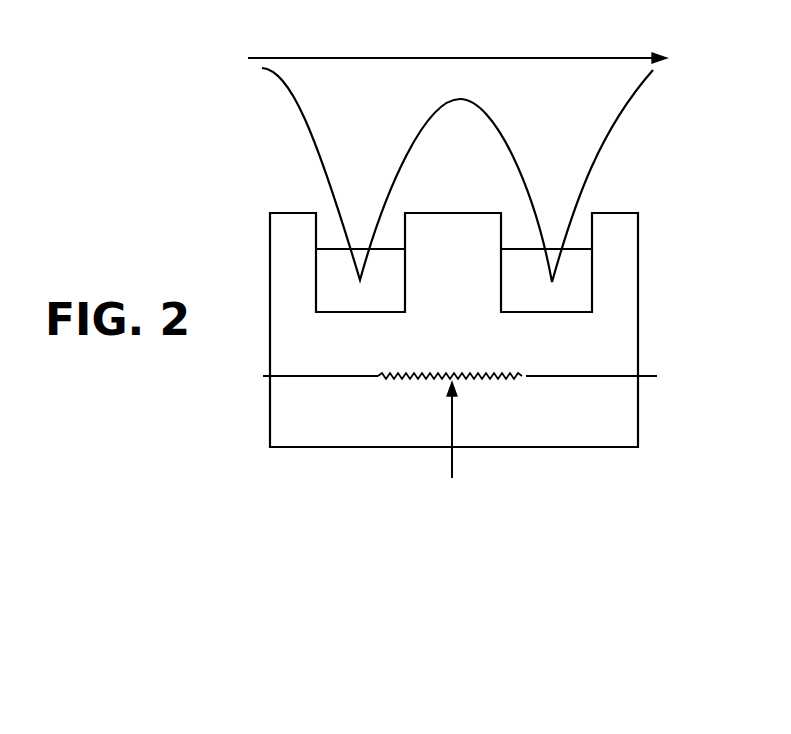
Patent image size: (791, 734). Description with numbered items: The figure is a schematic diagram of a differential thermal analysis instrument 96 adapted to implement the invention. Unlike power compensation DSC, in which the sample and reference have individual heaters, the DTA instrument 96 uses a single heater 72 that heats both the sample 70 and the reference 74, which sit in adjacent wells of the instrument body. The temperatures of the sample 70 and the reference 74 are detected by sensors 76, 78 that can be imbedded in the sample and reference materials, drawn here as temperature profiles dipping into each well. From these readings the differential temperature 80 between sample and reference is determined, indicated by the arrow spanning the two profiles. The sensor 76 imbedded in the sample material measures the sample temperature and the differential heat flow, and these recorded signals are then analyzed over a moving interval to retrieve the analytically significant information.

The sample 70 is at (400, 313).
The heater 72 is at (452, 467).
The reference 74 is at (501, 287).
The sensor 76 is at (322, 147).
The sensor 78 is at (606, 127).
The differential temperature 80 is at (333, 58).
The instrument 96 is at (638, 268).